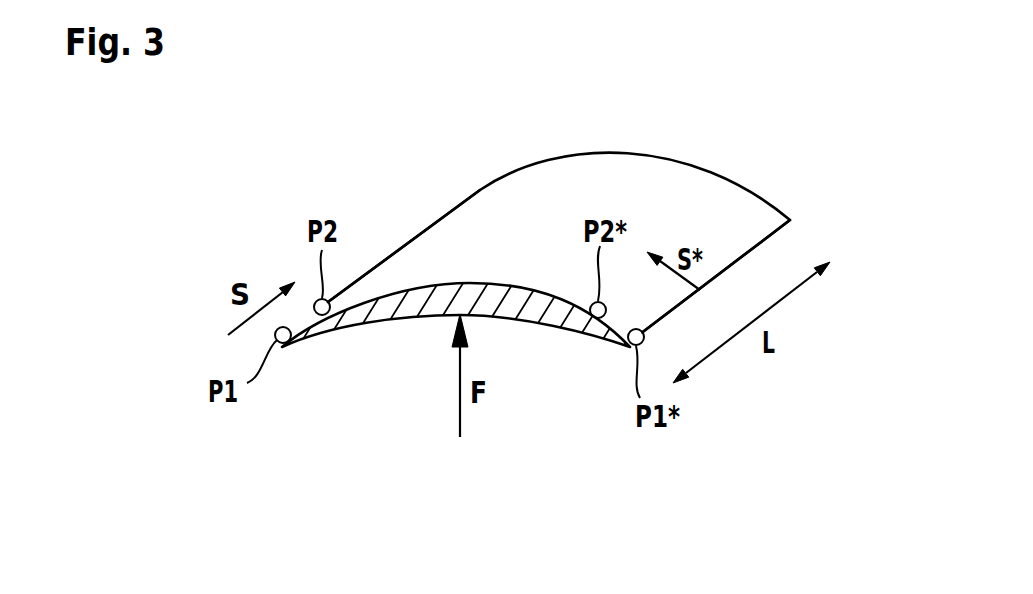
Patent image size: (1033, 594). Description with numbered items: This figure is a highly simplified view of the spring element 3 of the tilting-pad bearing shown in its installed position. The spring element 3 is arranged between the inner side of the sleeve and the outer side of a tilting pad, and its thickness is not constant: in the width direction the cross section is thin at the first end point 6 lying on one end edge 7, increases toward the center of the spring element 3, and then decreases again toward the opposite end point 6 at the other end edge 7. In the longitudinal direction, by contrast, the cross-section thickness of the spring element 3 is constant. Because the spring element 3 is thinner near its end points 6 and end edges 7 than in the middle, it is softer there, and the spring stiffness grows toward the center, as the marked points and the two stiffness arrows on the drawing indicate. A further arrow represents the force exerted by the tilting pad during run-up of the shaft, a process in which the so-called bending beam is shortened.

The spring element 3 is at (715, 207).
The end point 6 is at (418, 234).
The end edge 7 is at (628, 351).